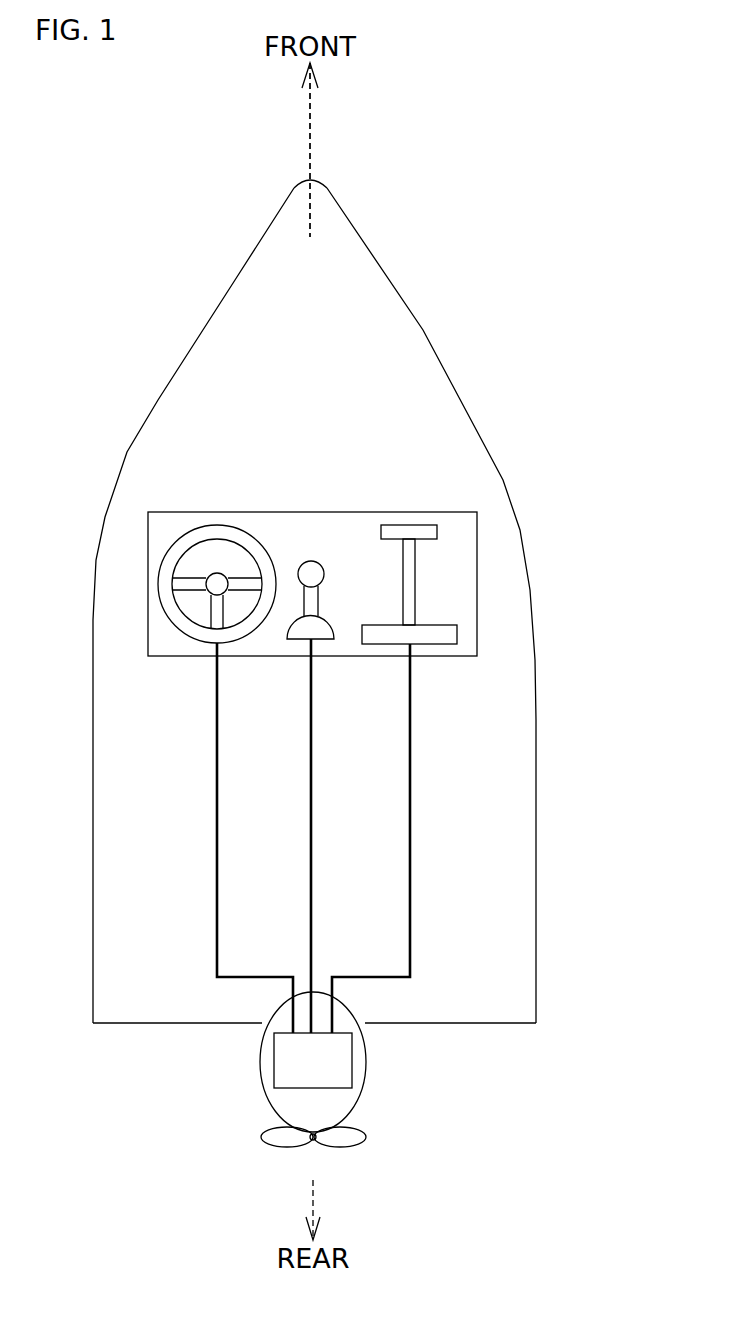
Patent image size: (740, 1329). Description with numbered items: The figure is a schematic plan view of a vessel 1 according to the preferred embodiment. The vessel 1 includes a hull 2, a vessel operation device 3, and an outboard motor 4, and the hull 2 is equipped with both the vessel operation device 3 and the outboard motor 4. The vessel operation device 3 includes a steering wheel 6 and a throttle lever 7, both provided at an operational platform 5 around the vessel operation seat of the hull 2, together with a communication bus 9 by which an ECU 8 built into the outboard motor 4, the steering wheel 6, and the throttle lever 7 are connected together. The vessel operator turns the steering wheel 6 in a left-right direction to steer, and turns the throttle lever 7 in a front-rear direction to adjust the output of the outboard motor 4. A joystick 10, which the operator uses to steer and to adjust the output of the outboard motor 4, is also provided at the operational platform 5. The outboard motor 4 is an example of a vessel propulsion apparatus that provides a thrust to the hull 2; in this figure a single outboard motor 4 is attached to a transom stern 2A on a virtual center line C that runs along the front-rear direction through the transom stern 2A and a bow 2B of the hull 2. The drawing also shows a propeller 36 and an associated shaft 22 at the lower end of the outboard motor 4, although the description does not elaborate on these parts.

The vessel 1 is at (484, 320).
The hull 2 is at (127, 452).
The transom stern 2A is at (179, 1025).
The bow 2B is at (296, 183).
The vessel operation device 3 is at (486, 577).
The outboard motor 4 is at (265, 1088).
The operational platform 5 is at (345, 526).
The steering wheel 6 is at (218, 528).
The throttle lever 7 is at (419, 530).
The ECU 8 is at (342, 1077).
The communication bus 9 is at (217, 843).
The joystick 10 is at (309, 561).
The propeller shaft 22 is at (318, 1145).
The propeller 36 is at (277, 1143).
The center line C is at (313, 148).